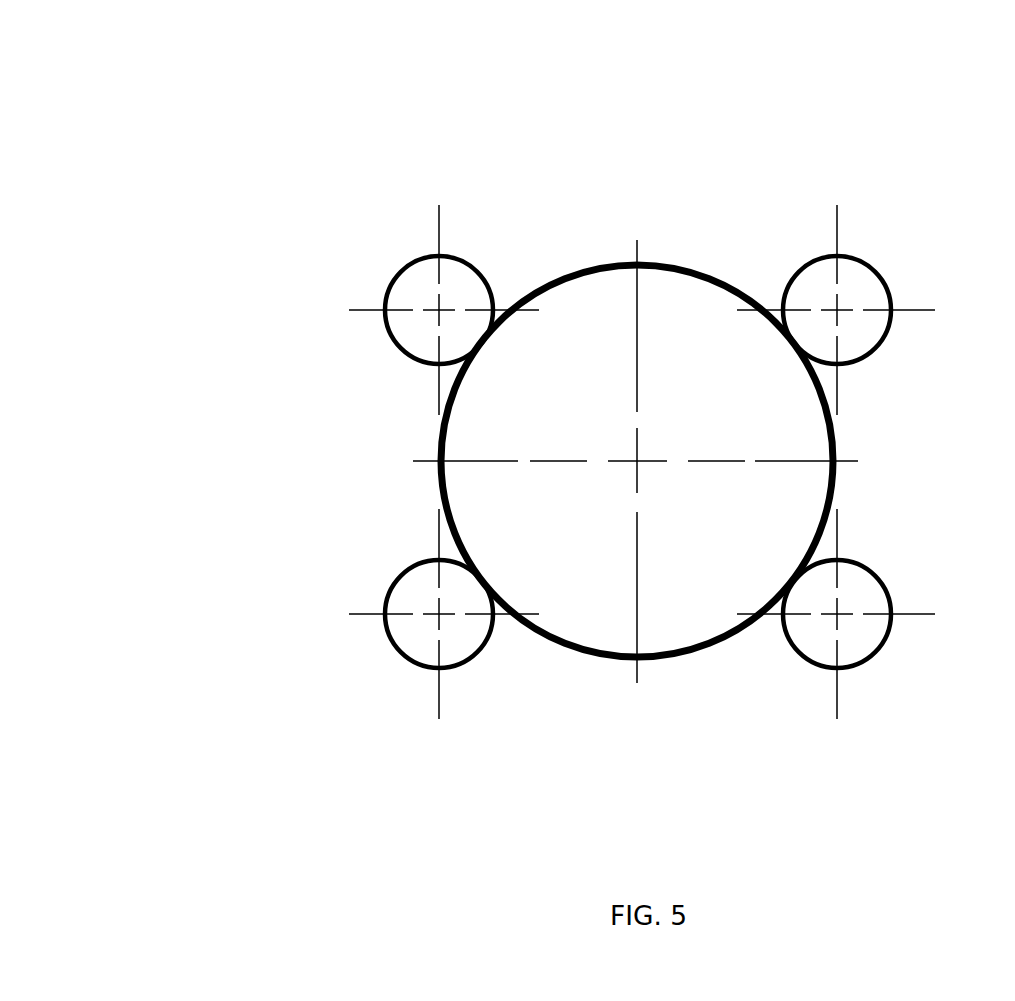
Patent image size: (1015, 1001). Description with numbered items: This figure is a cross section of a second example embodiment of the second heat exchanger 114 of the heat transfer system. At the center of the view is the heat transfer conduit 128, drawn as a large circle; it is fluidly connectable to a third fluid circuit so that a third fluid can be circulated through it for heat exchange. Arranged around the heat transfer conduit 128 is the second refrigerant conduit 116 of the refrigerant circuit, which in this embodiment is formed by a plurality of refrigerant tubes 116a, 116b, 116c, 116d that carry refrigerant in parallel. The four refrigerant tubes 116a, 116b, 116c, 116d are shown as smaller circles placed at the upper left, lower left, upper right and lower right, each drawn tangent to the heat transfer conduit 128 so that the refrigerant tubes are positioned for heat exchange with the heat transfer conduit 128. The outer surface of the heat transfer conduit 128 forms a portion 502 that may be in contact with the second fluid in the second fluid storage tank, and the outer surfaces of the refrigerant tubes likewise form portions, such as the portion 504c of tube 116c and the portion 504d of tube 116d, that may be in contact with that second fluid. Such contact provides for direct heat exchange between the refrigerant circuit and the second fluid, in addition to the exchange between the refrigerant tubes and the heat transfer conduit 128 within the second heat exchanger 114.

The second heat exchanger 114 is at (137, 30).
The portion of the heat transfer conduit 502 is at (587, 268).
The heat transfer conduit 128 is at (557, 395).
The second refrigerant conduit 116 is at (373, 262).
The refrigerant tube 116a is at (393, 308).
The refrigerant tube 116b is at (393, 605).
The refrigerant tube 116c is at (867, 308).
The refrigerant tube 116d is at (867, 611).
The portion of the second refrigerant conduit 504c is at (856, 277).
The portion of the second refrigerant conduit 504d is at (856, 579).